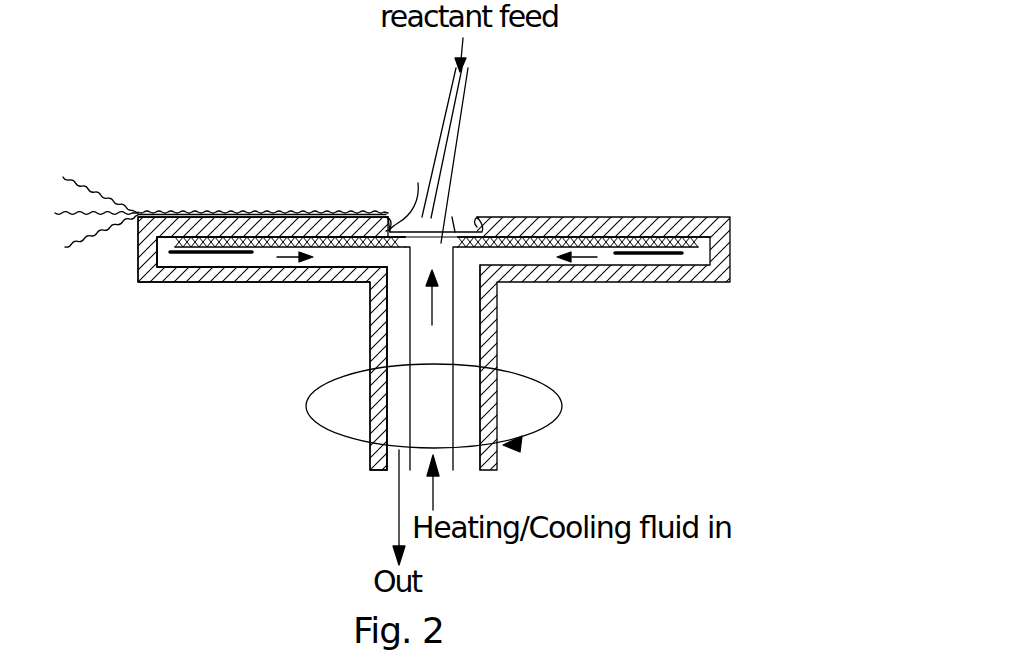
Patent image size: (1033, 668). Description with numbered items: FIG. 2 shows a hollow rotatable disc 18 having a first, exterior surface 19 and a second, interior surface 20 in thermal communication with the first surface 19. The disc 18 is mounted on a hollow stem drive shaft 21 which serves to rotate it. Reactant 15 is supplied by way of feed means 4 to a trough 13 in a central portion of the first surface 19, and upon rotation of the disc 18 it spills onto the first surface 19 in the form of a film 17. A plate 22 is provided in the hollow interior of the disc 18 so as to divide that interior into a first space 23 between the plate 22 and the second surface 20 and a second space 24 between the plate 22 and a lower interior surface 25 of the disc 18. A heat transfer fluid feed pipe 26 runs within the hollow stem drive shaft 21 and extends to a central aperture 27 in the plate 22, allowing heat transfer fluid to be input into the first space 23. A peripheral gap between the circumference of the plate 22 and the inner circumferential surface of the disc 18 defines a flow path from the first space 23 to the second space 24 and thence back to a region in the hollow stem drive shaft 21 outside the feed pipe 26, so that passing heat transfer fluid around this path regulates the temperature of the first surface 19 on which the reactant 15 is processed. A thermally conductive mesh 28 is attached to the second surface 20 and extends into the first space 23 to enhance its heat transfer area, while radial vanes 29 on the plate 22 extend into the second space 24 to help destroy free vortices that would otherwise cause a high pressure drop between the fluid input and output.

The feed means 4 is at (446, 113).
The trough 13 is at (462, 225).
The reactant 15 is at (418, 183).
The film 17 is at (273, 210).
The hollow rotatable disc 18 is at (319, 185).
The first, exterior surface 19 is at (525, 216).
The second, interior surface 20 is at (440, 250).
The hollow stem drive shaft 21 is at (487, 345).
The plate 22 is at (330, 258).
The first space 23 is at (177, 242).
The second space 24 is at (178, 258).
The lower interior surface 25 is at (255, 262).
The heat transfer fluid feed pipe 26 is at (458, 430).
The central aperture 27 is at (452, 217).
The thermally conductive mesh 28 is at (602, 216).
The radial vanes 29 is at (210, 256).